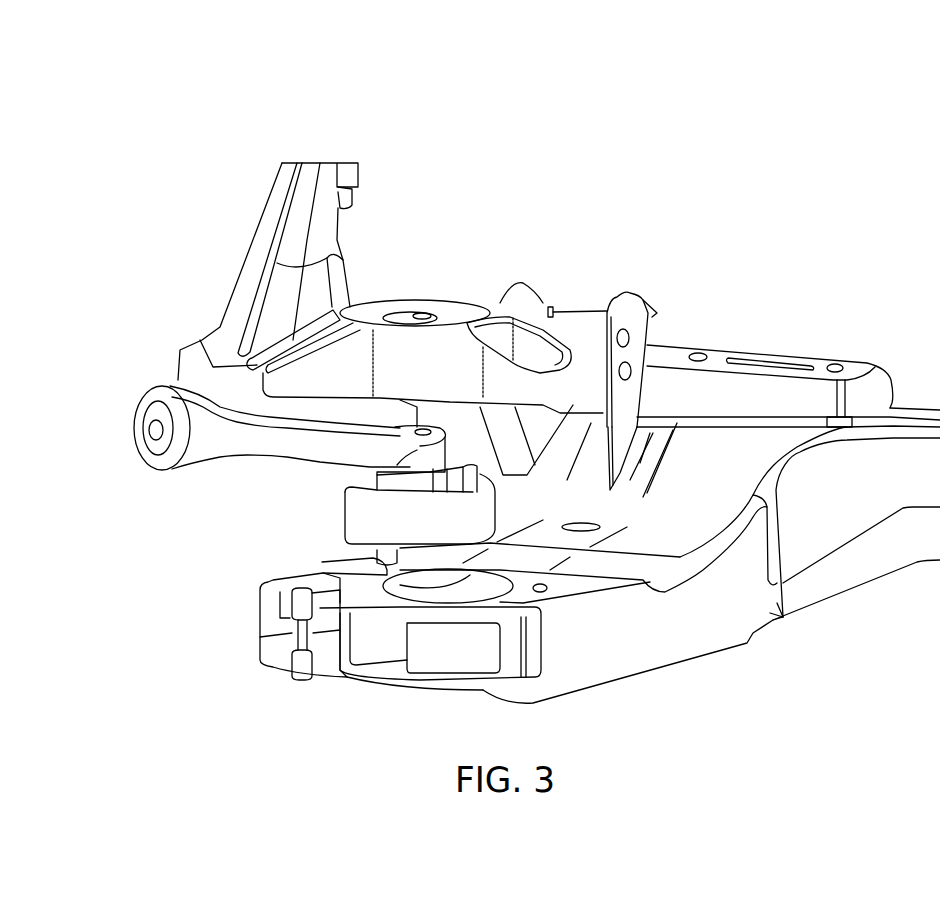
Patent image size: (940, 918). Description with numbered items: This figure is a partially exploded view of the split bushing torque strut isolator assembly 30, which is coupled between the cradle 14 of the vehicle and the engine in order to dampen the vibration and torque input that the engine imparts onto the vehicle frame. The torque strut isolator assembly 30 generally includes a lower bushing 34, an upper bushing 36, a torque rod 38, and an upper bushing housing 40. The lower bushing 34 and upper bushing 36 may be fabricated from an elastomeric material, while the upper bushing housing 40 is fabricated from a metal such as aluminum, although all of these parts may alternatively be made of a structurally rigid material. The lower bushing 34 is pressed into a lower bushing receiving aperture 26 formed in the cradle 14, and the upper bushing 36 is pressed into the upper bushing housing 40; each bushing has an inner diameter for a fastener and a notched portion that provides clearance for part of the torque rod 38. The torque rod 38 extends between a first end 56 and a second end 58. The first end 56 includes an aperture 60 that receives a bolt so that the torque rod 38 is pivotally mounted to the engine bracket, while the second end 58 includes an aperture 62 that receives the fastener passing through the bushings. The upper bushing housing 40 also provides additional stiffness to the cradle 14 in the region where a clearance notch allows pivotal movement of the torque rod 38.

The cradle 14 is at (823, 593).
The lower bushing receiving aperture 26 is at (323, 562).
The torque strut isolator assembly 30 is at (577, 238).
The lower bushing 34 is at (345, 522).
The upper bushing 36 is at (365, 314).
The torque rod 38 is at (262, 452).
The upper bushing housing 40 is at (467, 345).
The first end 56 is at (157, 468).
The second end 58 is at (377, 468).
The aperture 60 is at (157, 432).
The aperture 62 is at (421, 428).